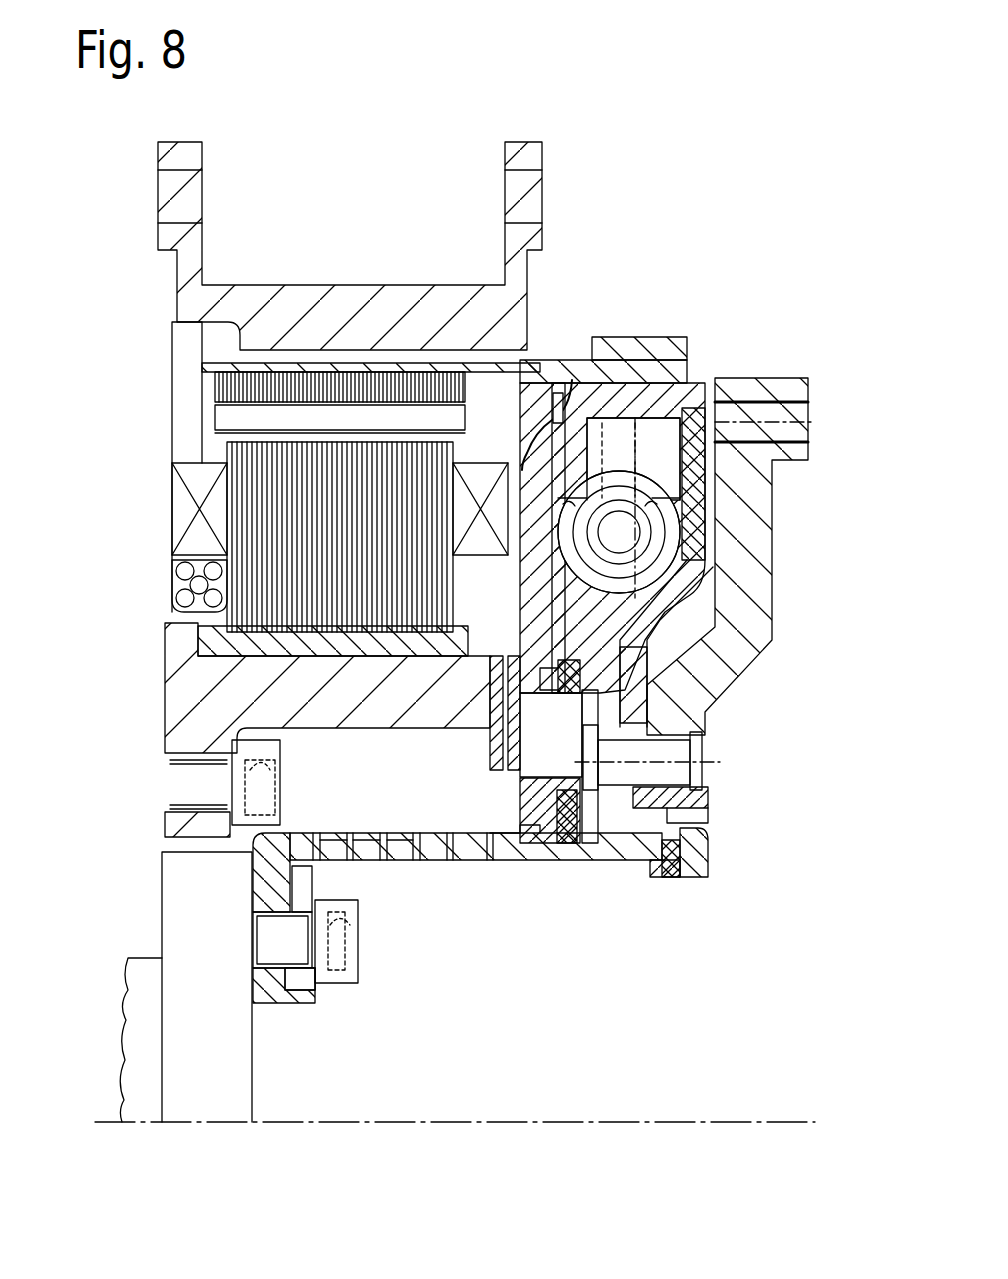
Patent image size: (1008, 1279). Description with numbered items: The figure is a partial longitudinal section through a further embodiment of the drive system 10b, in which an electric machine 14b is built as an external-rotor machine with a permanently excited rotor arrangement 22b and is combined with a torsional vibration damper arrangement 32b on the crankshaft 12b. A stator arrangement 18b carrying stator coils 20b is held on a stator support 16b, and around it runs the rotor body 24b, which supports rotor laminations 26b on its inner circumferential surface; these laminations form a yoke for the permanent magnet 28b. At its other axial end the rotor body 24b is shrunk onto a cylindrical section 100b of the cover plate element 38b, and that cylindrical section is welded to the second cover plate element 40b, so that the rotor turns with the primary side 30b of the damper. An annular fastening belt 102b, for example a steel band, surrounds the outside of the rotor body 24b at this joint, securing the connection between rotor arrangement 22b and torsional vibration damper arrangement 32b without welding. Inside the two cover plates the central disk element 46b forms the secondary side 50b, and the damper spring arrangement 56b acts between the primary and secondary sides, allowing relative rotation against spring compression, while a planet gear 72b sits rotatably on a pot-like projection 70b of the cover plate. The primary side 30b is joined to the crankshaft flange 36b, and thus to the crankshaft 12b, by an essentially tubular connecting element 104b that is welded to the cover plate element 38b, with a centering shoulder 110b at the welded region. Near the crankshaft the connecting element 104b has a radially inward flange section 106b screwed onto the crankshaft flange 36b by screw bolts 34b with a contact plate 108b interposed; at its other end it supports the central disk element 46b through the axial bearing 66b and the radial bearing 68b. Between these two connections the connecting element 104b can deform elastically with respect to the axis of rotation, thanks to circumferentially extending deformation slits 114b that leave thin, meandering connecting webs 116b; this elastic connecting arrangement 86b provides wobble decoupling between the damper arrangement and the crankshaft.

The drive system 10b is at (325, 170).
The crankshaft 12b is at (130, 1020).
The electric machine 14b is at (122, 245).
The stator support 16b is at (170, 692).
The stator arrangement 18b is at (130, 588).
The stator coils 20b is at (248, 500).
The rotor arrangement 22b is at (150, 400).
The rotor body 24b is at (435, 360).
The rotor laminations 26b is at (240, 372).
The permanent magnet 28b is at (235, 420).
The primary side 30b is at (612, 925).
The torsional vibration damper arrangement 32b is at (732, 305).
The screw bolts 34b is at (358, 976).
The crankshaft flange 36b is at (160, 882).
The cover plate element 38b is at (555, 395).
The cover plate element 40b is at (665, 440).
The central disk element 46b is at (612, 818).
The secondary side 50b is at (815, 565).
The damper spring arrangement 56b is at (657, 505).
The axial bearing 66b is at (668, 860).
The radial bearing 68b is at (628, 852).
The pot-like projection 70b is at (548, 735).
The planet gear 72b is at (573, 680).
The elastic connecting arrangement 86b is at (463, 892).
The cylindrical section 100b is at (665, 395).
The fastening belt 102b is at (615, 335).
The connecting element 104b is at (250, 852).
The flange section 106b is at (277, 992).
The contact plate 108b is at (305, 982).
The centering shoulder 110b is at (500, 835).
The deformation slits 114b is at (320, 857).
The connecting webs 116b is at (430, 855).